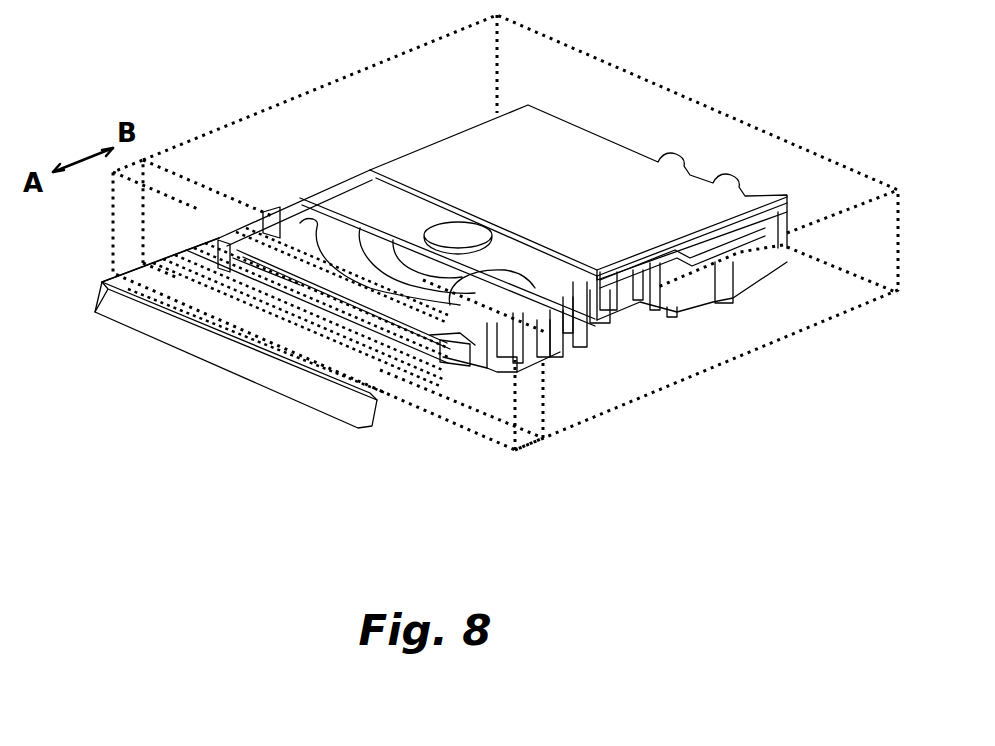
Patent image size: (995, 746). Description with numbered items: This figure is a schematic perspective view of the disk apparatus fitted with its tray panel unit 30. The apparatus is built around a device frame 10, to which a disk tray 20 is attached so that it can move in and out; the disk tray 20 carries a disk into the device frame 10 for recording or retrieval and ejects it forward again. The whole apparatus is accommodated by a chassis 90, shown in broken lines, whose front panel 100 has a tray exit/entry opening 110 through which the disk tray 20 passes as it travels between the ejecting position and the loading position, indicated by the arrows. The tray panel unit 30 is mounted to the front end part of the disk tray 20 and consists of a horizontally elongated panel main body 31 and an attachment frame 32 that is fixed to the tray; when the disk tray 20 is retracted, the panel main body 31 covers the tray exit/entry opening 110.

The device frame 10 is at (470, 347).
The disk tray 20 is at (580, 308).
The tray panel unit 30 is at (232, 357).
The panel main body 31 is at (230, 358).
The attachment frame 32 is at (177, 292).
The chassis 90 is at (765, 287).
The front panel 100 is at (543, 438).
The tray exit/entry opening 110 is at (418, 383).